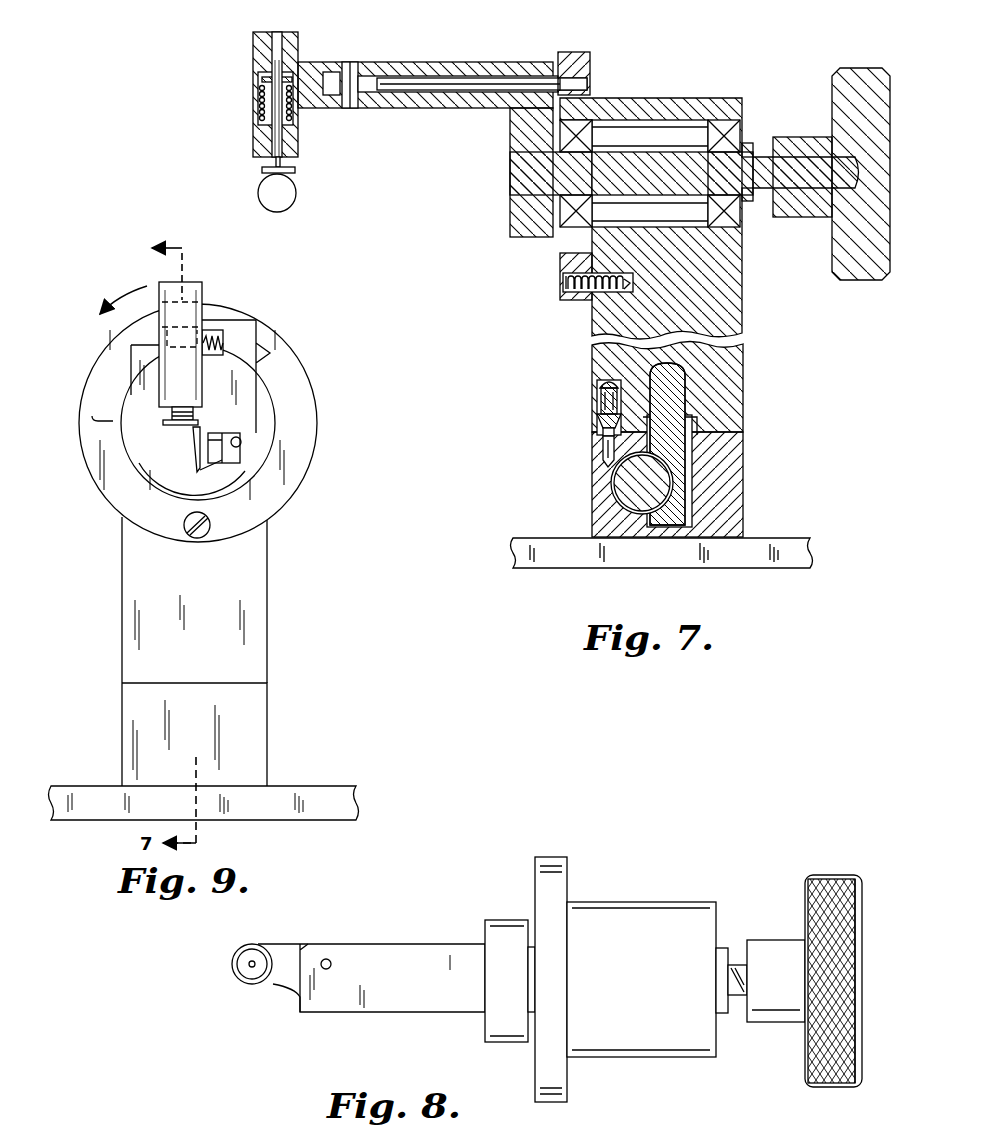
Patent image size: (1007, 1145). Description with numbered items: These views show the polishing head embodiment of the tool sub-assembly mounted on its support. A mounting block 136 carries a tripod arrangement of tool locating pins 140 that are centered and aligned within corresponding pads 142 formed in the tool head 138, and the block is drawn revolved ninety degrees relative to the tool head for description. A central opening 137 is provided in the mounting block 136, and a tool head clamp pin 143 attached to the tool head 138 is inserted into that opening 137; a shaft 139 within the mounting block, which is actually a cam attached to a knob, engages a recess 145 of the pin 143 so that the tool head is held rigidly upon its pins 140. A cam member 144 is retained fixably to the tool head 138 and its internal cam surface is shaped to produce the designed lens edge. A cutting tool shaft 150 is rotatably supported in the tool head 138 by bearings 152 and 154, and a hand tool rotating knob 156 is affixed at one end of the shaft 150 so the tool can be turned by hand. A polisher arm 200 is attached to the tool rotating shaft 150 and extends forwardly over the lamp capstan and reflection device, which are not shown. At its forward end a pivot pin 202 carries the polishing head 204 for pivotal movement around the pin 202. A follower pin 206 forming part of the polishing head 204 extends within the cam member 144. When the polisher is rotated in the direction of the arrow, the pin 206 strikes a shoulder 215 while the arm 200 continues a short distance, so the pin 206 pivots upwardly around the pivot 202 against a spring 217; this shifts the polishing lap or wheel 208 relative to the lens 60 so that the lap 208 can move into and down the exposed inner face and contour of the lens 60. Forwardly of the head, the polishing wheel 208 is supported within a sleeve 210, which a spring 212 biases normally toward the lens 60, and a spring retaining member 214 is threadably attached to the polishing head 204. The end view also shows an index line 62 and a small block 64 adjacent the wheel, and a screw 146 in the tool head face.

In FIG. 7, the lens 60 is at (290, 206).
In FIG. 9, the lens 60 is at (193, 466).
In FIG. 9, the index line 62 is at (222, 462).
In FIG. 9, the block 64 is at (240, 440).
In FIG. 7, the mounting block 136 is at (745, 490).
In FIG. 9, the mounting block 136 is at (268, 737).
In FIG. 7, the opening 137 is at (688, 568).
In FIG. 7, the tool head 138 is at (745, 360).
In FIG. 9, the tool head 138 is at (268, 632).
In FIG. 8, the tool head 138 is at (700, 1058).
In FIG. 7, the shaft 139 is at (622, 500).
In FIG. 7, the tool locating pins 140 is at (602, 442).
In FIG. 7, the pads 142 is at (598, 420).
In FIG. 7, the tool head clamp pin 143 is at (683, 445).
In FIG. 7, the cam member 144 is at (590, 62).
In FIG. 9, the cam member 144 is at (117, 365).
In FIG. 8, the cam member 144 is at (545, 1102).
In FIG. 7, the recess 145 is at (650, 458).
In FIG. 7, the spring loaded screw 146 is at (562, 287).
In FIG. 9, the spring loaded screw 146 is at (210, 522).
In FIG. 7, the cutting tool shaft 150 is at (758, 157).
In FIG. 8, the cutting tool shaft 150 is at (740, 996).
In FIG. 7, the bearing 152 is at (745, 140).
In FIG. 7, the bearing 154 is at (598, 135).
In FIG. 7, the hand tool rotating knob 156 is at (848, 282).
In FIG. 8, the hand tool rotating knob 156 is at (835, 1087).
In FIG. 7, the polisher arm 200 is at (535, 238).
In FIG. 8, the polisher arm 200 is at (512, 922).
In FIG. 7, the pivot pin 202 is at (350, 108).
In FIG. 8, the pivot pin 202 is at (330, 962).
In FIG. 7, the polishing head 204 is at (322, 64).
In FIG. 8, the polishing head 204 is at (290, 950).
In FIG. 7, the follower pin 206 is at (455, 78).
In FIG. 7, the polishing wheel 208 is at (296, 170).
In FIG. 9, the polishing wheel 208 is at (203, 422).
In FIG. 7, the sleeve 210 is at (298, 148).
In FIG. 9, the sleeve 210 is at (165, 412).
In FIG. 7, the spring 212 is at (258, 108).
In FIG. 7, the spring retaining member 214 is at (296, 36).
In FIG. 9, the spring retaining member 214 is at (203, 292).
In FIG. 8, the spring retaining member 214 is at (255, 948).
In FIG. 9, the shoulder 215 is at (92, 416).
In FIG. 9, the spring 217 is at (225, 340).